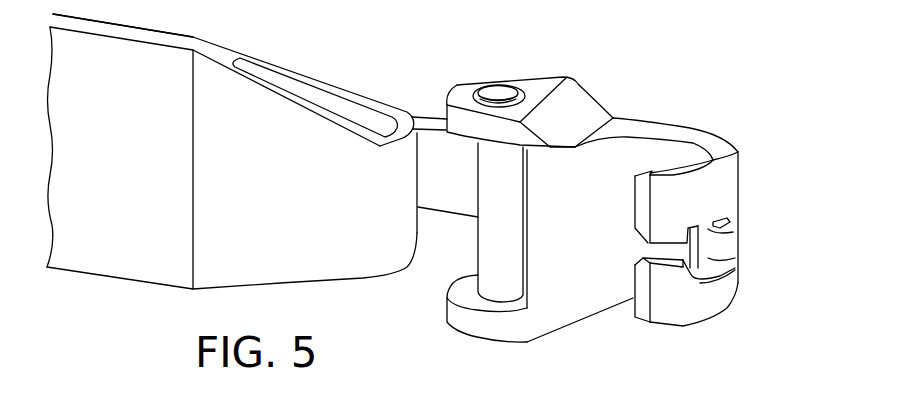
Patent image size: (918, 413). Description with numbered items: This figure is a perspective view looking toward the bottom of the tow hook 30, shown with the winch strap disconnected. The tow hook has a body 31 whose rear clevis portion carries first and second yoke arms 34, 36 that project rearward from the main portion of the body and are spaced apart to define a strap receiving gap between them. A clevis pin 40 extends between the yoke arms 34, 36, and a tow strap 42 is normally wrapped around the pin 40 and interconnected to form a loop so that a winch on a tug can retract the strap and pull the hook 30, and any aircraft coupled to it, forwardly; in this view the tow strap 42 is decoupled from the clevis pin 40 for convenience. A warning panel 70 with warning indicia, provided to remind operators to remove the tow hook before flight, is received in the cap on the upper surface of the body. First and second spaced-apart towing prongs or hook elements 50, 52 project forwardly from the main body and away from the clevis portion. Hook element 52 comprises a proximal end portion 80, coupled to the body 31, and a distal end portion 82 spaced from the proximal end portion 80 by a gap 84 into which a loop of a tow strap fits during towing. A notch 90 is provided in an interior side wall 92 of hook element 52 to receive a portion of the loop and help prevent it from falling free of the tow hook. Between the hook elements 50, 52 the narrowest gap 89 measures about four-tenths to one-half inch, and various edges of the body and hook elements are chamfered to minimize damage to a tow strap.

The tow hook 30 is at (690, 107).
The body 31 is at (618, 160).
The first yoke arm 34 is at (538, 77).
The second yoke arm 36 is at (498, 330).
The clevis pin 40 is at (478, 248).
The tow strap 42 is at (135, 250).
The first hook element 50 is at (668, 200).
The second hook element 52 is at (680, 297).
The warning panel 70 is at (430, 118).
The proximal end portion 80 is at (732, 193).
The distal end portion 82 is at (635, 190).
The gap 84 is at (649, 150).
The narrowest gap 89 is at (637, 248).
The notch 90 is at (712, 260).
The interior side wall 92 is at (725, 223).